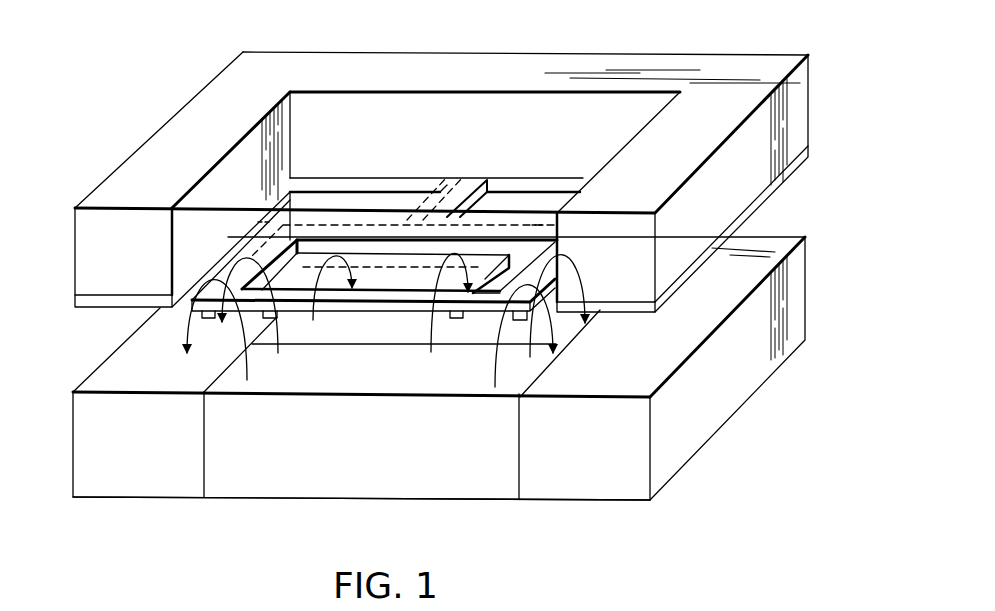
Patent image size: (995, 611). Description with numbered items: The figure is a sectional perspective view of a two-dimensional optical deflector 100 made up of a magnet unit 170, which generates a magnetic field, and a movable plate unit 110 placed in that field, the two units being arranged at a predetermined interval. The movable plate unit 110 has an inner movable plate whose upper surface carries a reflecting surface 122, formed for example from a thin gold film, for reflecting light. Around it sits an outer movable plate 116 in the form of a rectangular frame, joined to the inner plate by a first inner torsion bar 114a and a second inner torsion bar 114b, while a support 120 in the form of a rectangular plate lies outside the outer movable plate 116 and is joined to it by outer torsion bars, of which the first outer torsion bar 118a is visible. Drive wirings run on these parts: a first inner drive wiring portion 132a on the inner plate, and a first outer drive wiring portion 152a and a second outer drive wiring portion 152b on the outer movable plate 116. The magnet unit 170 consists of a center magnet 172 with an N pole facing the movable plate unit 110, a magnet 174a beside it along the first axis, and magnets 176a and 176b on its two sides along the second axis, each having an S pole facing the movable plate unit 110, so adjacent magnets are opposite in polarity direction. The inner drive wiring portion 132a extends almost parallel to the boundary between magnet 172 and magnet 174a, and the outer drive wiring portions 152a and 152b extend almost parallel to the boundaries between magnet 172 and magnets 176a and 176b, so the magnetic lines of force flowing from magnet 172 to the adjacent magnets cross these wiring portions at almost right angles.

The two-dimensional optical deflector 100 is at (150, 85).
The movable plate unit 110 is at (828, 110).
The support 120 is at (396, 52).
The reflecting surface 122 is at (352, 253).
The first inner drive wiring portion 132a is at (377, 262).
The first outer drive wiring portion 152a is at (538, 222).
The second outer drive wiring portion 152b is at (262, 218).
The first outer torsion bar 118a is at (460, 177).
The outer movable plate 116 is at (495, 220).
The magnet unit 170 is at (828, 262).
The magnet 172 is at (428, 497).
The magnet 174a is at (373, 323).
The magnet 176a is at (735, 387).
The magnet 176b is at (115, 368).
The first inner torsion bar 114a is at (465, 296).
The second inner torsion bar 114b is at (258, 300).